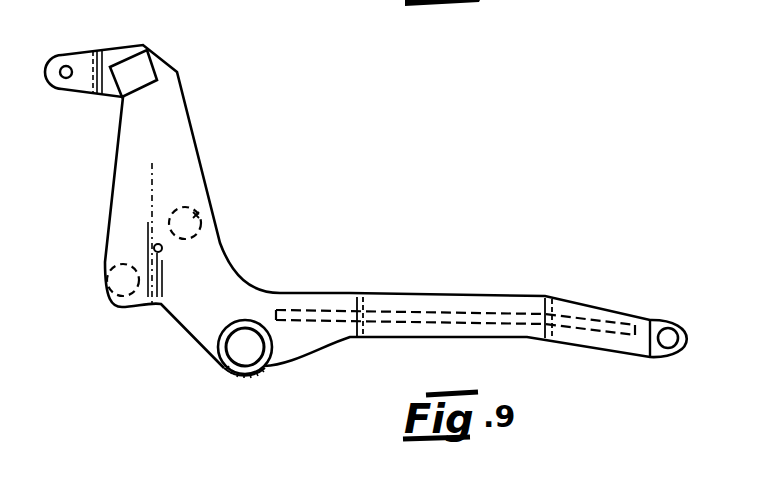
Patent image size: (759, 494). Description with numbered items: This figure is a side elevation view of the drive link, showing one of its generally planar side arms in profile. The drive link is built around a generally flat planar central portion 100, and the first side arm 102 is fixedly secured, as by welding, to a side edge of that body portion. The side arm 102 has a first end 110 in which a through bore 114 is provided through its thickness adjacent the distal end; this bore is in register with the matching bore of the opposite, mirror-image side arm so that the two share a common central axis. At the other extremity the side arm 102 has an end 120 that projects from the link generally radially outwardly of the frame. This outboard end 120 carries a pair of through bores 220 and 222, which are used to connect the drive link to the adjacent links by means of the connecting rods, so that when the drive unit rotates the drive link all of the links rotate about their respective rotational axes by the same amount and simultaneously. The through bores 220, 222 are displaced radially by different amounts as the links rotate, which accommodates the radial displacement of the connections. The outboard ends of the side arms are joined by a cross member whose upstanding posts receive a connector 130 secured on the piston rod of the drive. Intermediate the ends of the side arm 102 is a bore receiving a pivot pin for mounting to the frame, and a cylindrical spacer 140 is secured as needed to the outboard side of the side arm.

The central portion 100 is at (415, 312).
The first side arm 102 is at (513, 295).
The first end 110 is at (632, 316).
The through bore 114 is at (673, 327).
The end 120 is at (190, 113).
The connector 130 is at (77, 53).
The cylindrical spacer 140 is at (222, 338).
The through bore 220 is at (209, 211).
The through bore 222 is at (100, 265).